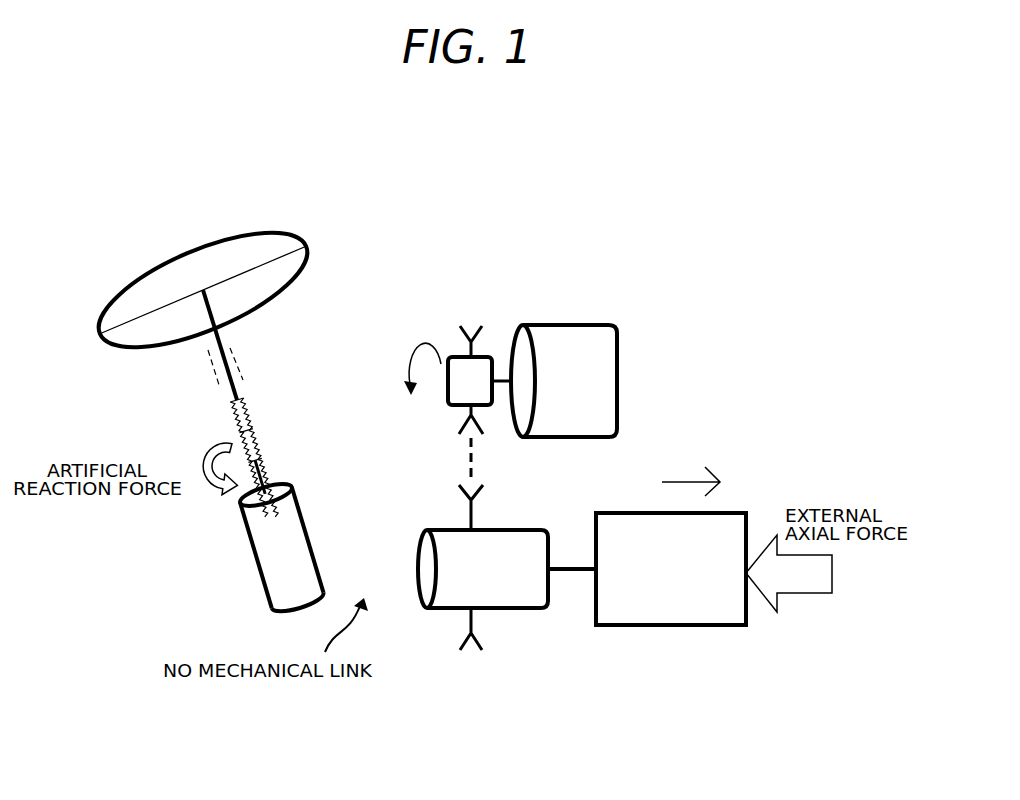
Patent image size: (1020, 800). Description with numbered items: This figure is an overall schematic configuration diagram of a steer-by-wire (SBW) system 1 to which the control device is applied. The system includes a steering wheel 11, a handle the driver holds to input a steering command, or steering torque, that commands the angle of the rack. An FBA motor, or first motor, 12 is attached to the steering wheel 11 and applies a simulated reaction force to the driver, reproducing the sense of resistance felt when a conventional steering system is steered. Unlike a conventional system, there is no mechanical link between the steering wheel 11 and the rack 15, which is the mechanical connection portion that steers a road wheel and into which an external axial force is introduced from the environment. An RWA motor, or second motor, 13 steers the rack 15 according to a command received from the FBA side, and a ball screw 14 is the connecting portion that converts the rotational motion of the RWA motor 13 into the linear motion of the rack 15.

The steering system 1 is at (496, 222).
The steering wheel 11 is at (262, 232).
The FBA motor (first motor) 12 is at (310, 537).
The RWA motor (second motor) 13 is at (573, 325).
The ball screw 14 is at (510, 610).
The rack 15 is at (693, 627).